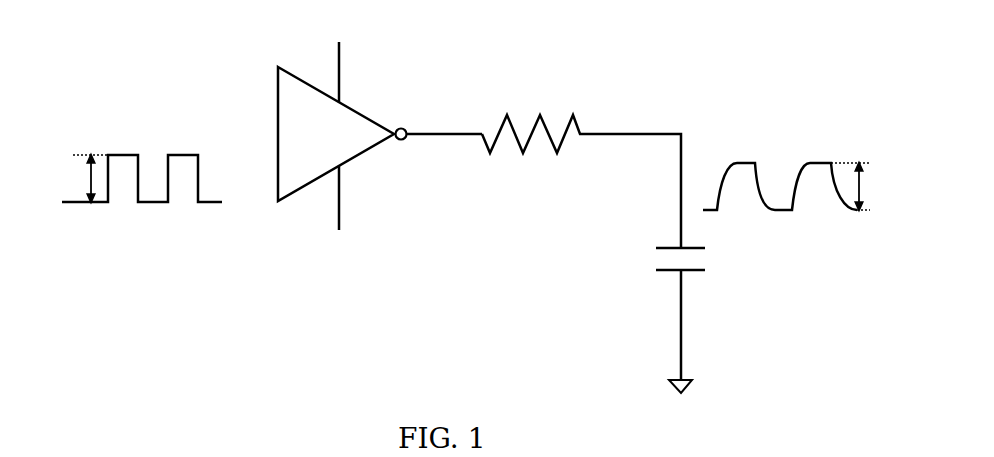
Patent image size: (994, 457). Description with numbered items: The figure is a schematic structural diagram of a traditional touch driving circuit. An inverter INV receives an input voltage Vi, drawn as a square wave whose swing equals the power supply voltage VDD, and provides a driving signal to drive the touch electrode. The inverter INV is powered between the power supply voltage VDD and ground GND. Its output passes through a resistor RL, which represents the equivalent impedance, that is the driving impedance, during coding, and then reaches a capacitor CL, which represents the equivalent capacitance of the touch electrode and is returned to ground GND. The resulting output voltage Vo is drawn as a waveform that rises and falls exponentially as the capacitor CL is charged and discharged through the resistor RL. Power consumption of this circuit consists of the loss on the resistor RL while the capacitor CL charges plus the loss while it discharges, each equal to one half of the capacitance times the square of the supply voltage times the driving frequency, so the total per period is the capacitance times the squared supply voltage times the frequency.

The input voltage Vi is at (278, 133).
The inverter INV is at (380, 134).
The power supply voltage VDD is at (339, 58).
The ground GND is at (336, 213).
The resistor RL is at (581, 164).
The capacitor CL is at (700, 320).
The output voltage Vo is at (810, 169).